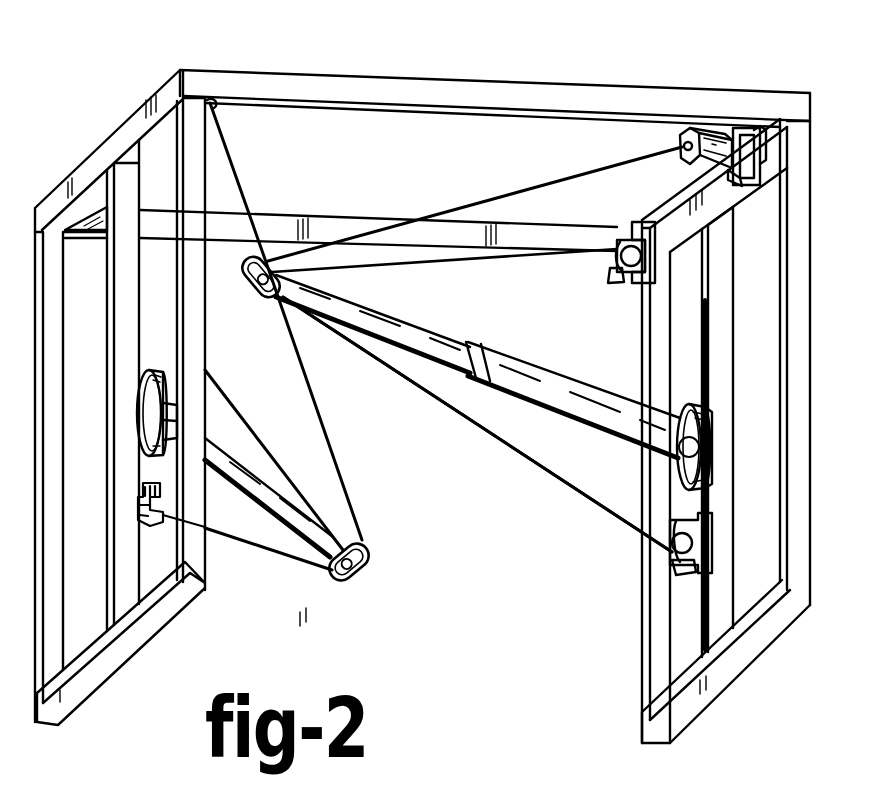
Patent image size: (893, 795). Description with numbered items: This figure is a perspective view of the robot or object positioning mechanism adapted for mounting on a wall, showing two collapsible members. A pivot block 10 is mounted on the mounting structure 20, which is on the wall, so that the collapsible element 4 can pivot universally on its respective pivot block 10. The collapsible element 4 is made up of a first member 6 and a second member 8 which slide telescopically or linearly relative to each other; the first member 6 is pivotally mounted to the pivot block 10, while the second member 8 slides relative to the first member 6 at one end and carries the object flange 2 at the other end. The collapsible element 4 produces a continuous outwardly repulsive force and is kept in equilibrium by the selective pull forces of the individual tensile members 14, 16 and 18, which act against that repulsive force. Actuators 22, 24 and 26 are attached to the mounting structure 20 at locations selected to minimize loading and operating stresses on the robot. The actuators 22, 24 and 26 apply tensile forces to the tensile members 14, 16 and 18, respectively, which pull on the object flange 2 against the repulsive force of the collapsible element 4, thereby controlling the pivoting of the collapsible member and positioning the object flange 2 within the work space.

The mounting structure 20 is at (119, 80).
The object flange 2 is at (244, 292).
The collapsible element 4 is at (467, 397).
The tensile member 14 is at (550, 477).
The first member 6 is at (568, 385).
The second member 8 is at (410, 301).
The pivot block 10 is at (143, 417).
The tensile member 16 is at (532, 190).
The tensile member 18 is at (517, 256).
The actuator 22 is at (700, 573).
The actuator 24 is at (622, 283).
The actuator 26 is at (702, 126).